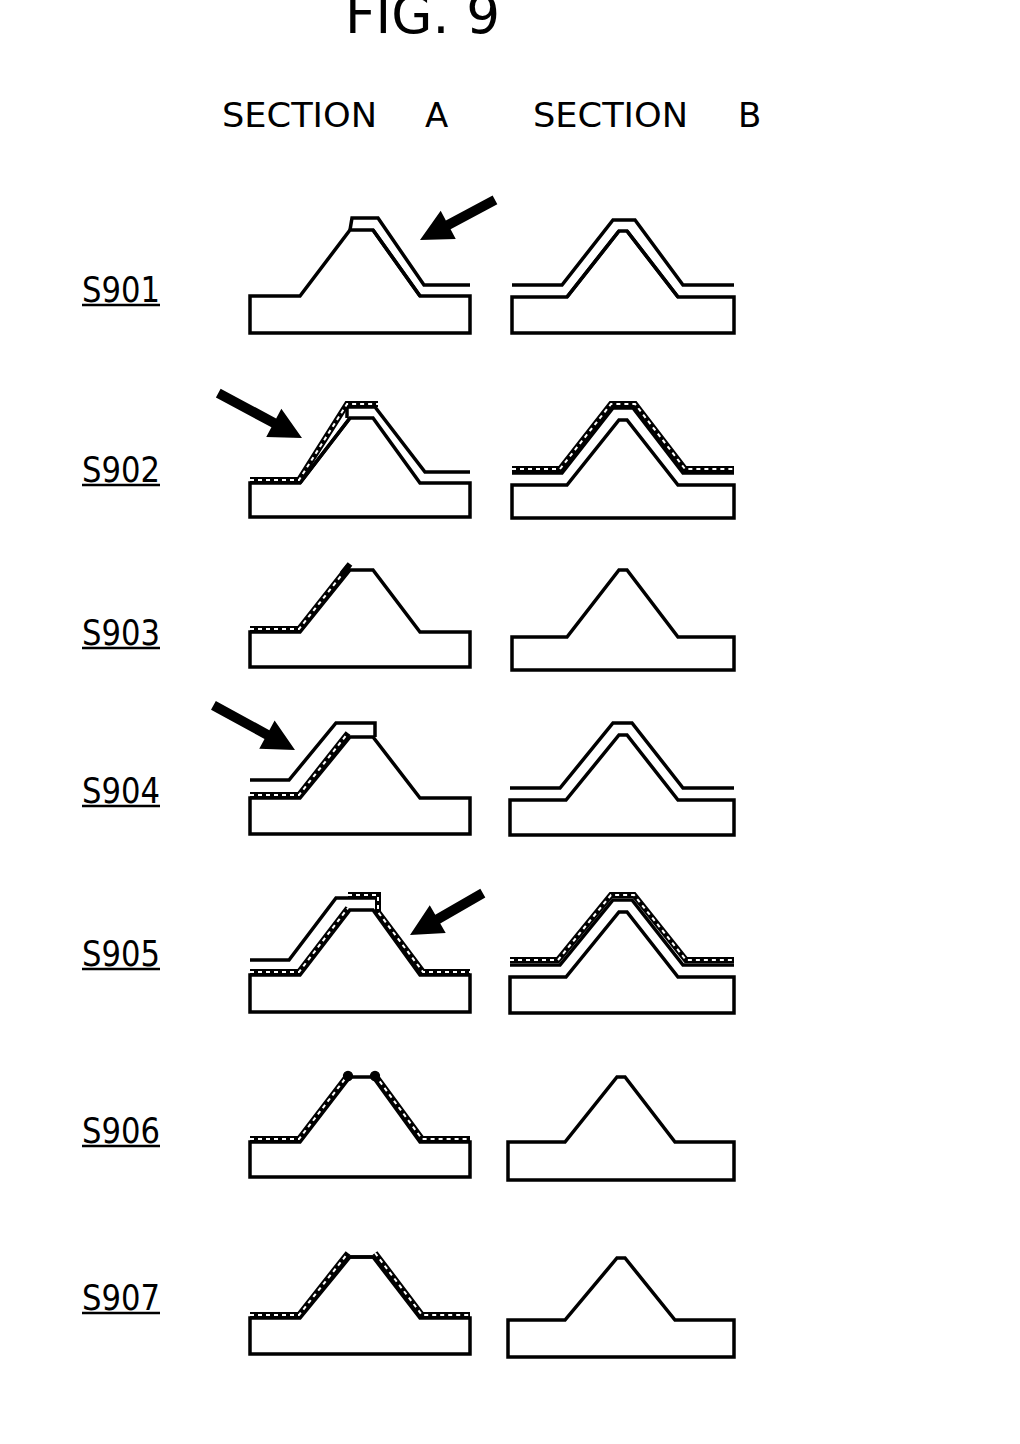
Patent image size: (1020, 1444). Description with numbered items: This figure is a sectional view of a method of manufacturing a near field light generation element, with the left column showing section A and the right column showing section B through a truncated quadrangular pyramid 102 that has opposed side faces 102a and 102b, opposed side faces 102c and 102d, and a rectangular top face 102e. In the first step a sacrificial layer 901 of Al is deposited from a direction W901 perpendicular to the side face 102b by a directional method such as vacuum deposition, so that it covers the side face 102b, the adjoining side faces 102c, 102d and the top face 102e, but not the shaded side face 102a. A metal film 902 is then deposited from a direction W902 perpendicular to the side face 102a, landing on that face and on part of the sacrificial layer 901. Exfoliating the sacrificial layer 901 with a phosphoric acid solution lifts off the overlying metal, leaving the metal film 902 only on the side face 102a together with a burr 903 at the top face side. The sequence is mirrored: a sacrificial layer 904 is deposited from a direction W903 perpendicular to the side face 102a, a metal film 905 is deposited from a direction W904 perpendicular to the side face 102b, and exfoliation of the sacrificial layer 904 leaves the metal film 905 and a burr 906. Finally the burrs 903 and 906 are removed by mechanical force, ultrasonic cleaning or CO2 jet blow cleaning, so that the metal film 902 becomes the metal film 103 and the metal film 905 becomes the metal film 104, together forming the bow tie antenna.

The truncated quadrangular pyramid 102 is at (360, 272).
The side face 102a is at (330, 447).
The side face 102b is at (400, 268).
The side face 102c is at (585, 277).
The side face 102d is at (658, 277).
The top face 102e is at (355, 1255).
The metal film 103 is at (317, 1280).
The metal film 104 is at (400, 1278).
The sacrificial layer 901 is at (365, 222).
The metal film 902 is at (332, 428).
The burr 903 is at (350, 568).
The sacrificial layer 904 is at (337, 735).
The metal film 905 is at (400, 887).
The burr 906 is at (377, 1073).
The direction W901 is at (465, 207).
The direction W902 is at (225, 415).
The direction W903 is at (216, 727).
The direction W904 is at (481, 909).